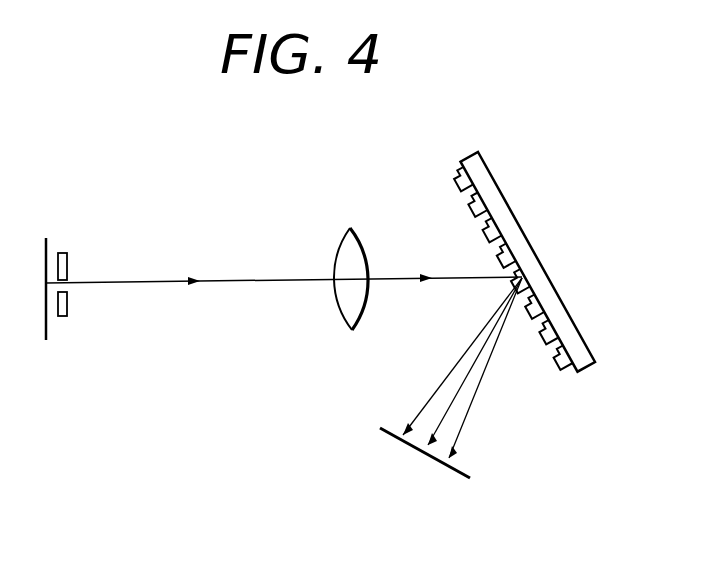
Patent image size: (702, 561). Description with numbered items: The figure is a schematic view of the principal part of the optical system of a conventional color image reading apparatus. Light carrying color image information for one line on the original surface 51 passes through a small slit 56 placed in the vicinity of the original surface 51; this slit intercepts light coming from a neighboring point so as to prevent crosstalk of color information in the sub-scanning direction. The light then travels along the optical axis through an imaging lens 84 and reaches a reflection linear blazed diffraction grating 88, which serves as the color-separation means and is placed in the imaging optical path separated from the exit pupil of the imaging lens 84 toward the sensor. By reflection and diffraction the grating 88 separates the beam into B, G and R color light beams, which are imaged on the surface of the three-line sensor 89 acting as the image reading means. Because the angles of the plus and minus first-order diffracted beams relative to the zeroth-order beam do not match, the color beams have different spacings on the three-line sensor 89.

The original surface 51 is at (48, 244).
The small slit 56 is at (67, 303).
The imaging lens 84 is at (360, 238).
The reflection linear blazed diffraction grating 88 is at (485, 160).
The 3-line sensor 89 is at (466, 482).